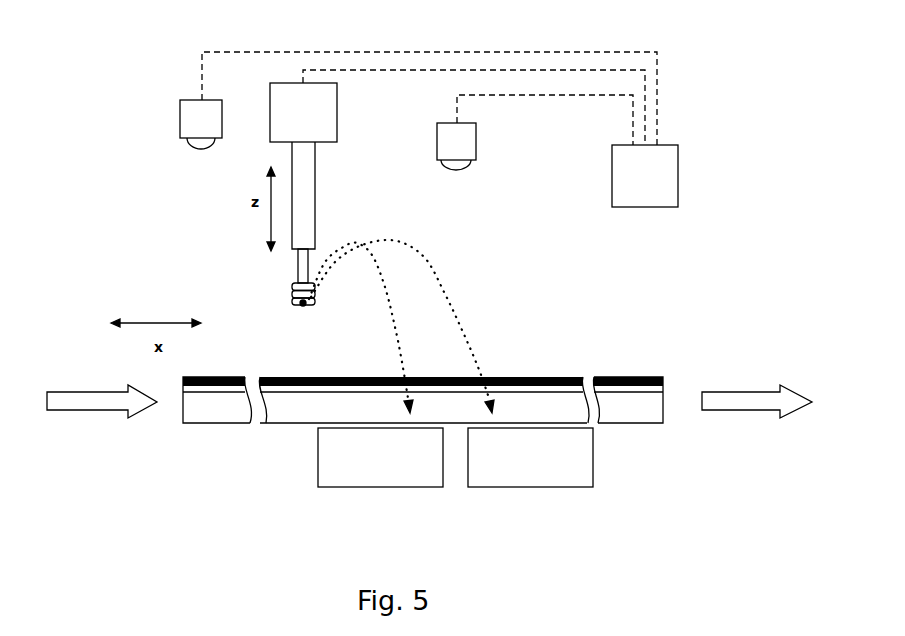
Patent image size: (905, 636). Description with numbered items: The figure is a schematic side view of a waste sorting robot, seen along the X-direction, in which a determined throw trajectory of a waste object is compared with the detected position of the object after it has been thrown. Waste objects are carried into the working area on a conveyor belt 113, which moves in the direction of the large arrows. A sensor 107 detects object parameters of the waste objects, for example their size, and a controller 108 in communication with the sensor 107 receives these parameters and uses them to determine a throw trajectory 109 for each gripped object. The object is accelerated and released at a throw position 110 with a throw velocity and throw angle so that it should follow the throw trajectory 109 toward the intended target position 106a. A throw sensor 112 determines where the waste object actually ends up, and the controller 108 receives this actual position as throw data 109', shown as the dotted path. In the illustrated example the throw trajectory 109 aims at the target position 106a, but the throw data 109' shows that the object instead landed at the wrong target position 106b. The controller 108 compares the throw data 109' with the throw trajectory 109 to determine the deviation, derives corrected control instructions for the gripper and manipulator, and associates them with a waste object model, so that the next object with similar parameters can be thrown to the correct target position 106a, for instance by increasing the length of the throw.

The target position 106a is at (575, 455).
The target position 106b is at (332, 455).
The sensor 107 is at (200, 150).
The controller 108 is at (645, 176).
The throw trajectory 109 is at (427, 326).
The throw data 109' is at (361, 327).
The throw position 110 is at (300, 303).
The throw sensor 112 is at (456, 171).
The conveyor belt 113 is at (310, 383).